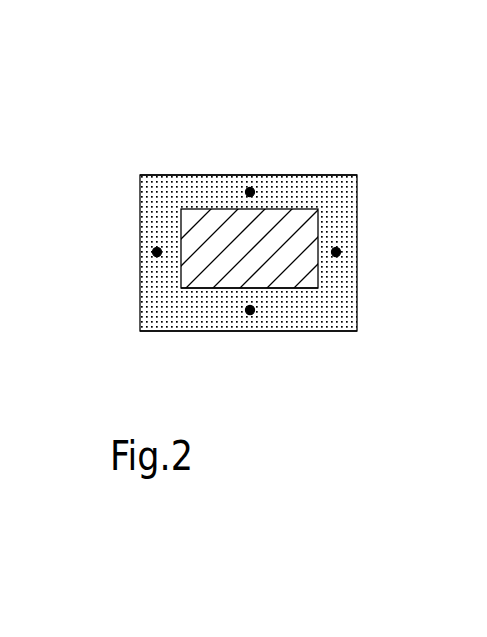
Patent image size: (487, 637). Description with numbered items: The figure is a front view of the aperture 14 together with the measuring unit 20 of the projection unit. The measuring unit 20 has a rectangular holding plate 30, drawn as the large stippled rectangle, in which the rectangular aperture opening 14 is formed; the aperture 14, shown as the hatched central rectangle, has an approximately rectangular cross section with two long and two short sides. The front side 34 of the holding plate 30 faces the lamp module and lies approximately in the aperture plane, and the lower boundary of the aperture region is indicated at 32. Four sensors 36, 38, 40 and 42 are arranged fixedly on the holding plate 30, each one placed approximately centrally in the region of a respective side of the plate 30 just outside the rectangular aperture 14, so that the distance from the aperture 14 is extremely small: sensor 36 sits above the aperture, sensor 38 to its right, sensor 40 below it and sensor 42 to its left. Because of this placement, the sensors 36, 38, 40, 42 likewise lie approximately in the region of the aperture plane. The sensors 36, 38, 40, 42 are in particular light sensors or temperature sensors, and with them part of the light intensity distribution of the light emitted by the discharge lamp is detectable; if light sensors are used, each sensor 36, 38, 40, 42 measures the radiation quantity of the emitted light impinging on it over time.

The aperture 14 is at (287, 209).
The measuring unit 20 is at (173, 175).
The holding plate 30 is at (343, 190).
The lower edge of chip region 32 is at (302, 288).
The front side 34 is at (150, 331).
The sensor 36 is at (250, 190).
The sensor 38 is at (338, 252).
The sensor 40 is at (250, 313).
The sensor 42 is at (155, 252).